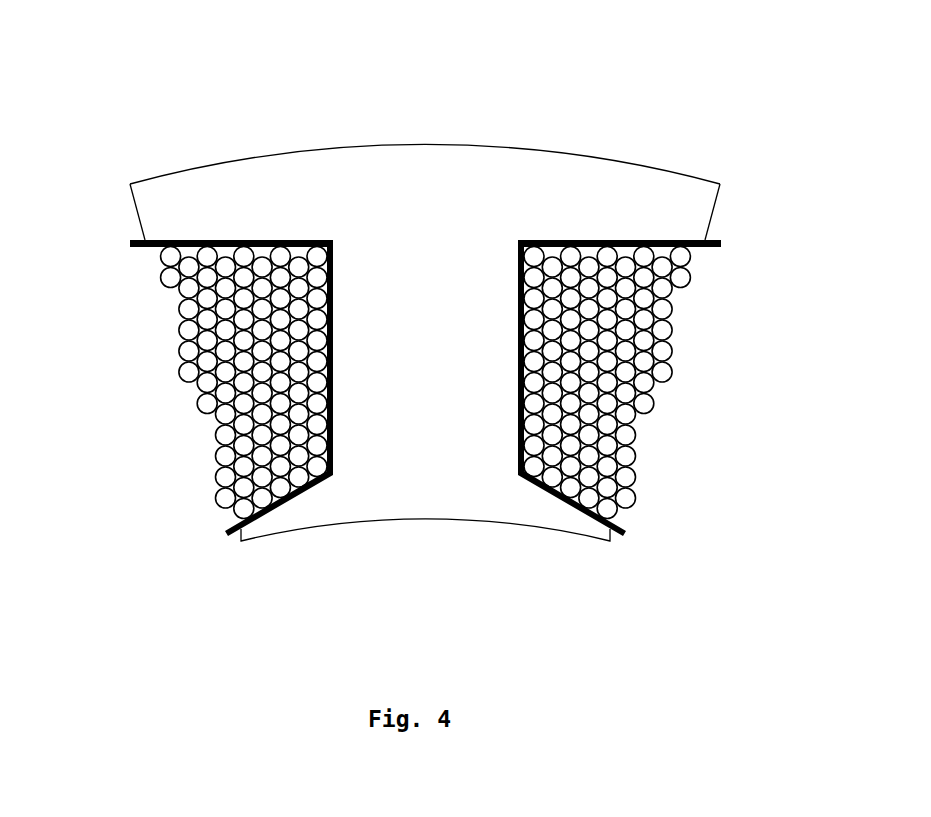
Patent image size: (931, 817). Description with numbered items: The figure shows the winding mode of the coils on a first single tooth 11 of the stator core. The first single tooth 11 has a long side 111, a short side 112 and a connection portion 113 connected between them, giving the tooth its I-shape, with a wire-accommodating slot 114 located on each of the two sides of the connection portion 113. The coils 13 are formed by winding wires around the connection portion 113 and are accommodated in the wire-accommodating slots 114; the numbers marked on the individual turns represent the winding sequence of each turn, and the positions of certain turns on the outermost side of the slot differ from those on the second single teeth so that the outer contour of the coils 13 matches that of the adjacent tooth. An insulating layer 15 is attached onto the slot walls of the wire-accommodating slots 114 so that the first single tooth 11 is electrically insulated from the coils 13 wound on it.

The first single tooth 11 is at (389, 343).
The long side 111 is at (222, 177).
The short side 112 is at (420, 503).
The connection portion 113 is at (372, 372).
The wire-accommodating slot 114 is at (732, 316).
The insulating layer 15 is at (297, 240).
The coil 13 is at (613, 430).